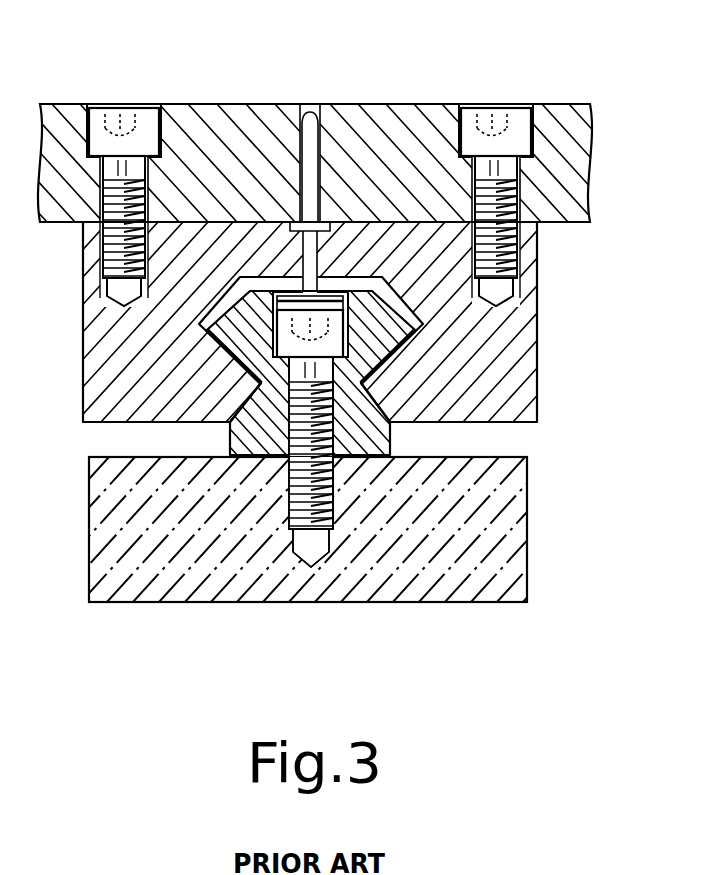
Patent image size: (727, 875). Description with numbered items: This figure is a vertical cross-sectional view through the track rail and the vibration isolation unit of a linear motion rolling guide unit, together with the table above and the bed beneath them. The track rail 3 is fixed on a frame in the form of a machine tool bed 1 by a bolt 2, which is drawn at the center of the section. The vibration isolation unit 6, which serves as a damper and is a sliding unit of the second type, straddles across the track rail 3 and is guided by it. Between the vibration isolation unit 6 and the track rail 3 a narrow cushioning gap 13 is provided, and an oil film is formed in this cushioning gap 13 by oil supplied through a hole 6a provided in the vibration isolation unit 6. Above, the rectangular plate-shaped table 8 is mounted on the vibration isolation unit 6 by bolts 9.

The machine tool bed 1 is at (186, 600).
The bolt 2 is at (290, 488).
The track rail 3 is at (392, 435).
The vibration isolation unit 6 is at (522, 342).
The hole 6a is at (311, 104).
The table 8 is at (240, 104).
The bolts 9 is at (150, 104).
The cushioning gap 13 is at (372, 283).